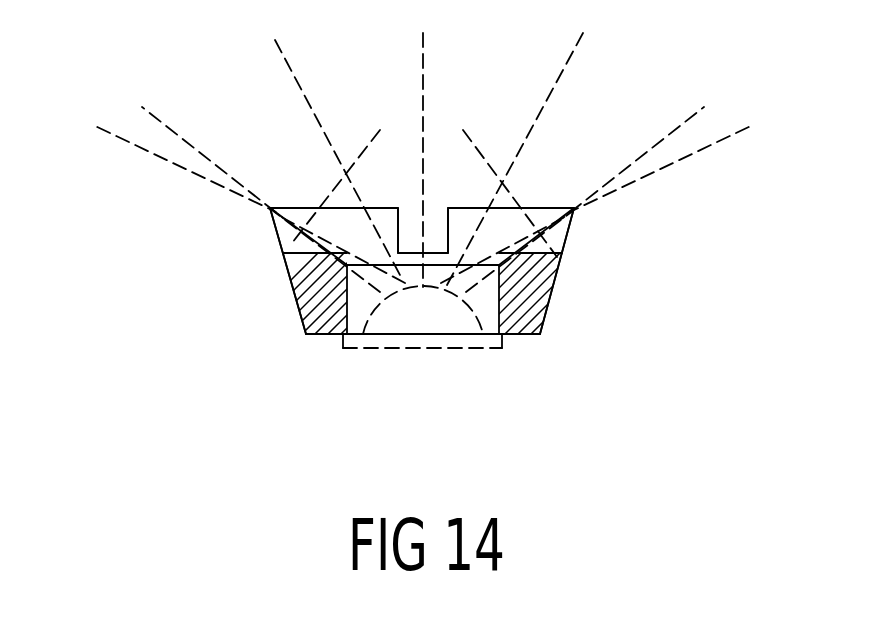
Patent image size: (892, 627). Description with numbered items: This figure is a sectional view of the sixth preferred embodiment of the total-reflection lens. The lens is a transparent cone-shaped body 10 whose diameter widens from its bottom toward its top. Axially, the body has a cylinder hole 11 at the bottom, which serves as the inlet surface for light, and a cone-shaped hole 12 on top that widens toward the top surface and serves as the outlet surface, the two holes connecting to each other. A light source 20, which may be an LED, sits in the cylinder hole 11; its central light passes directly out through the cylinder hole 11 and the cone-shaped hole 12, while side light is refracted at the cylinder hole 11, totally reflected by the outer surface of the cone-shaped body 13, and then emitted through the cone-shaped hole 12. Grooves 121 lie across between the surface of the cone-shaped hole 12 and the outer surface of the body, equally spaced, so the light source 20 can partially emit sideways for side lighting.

The transparent cone-shaped body 10 is at (562, 160).
The cylinder hole 11 is at (487, 307).
The cone-shaped hole 12 is at (332, 225).
The grooves 121 is at (448, 228).
The outer surface of the cone-shaped body 13 is at (296, 307).
The light source 20 is at (415, 287).